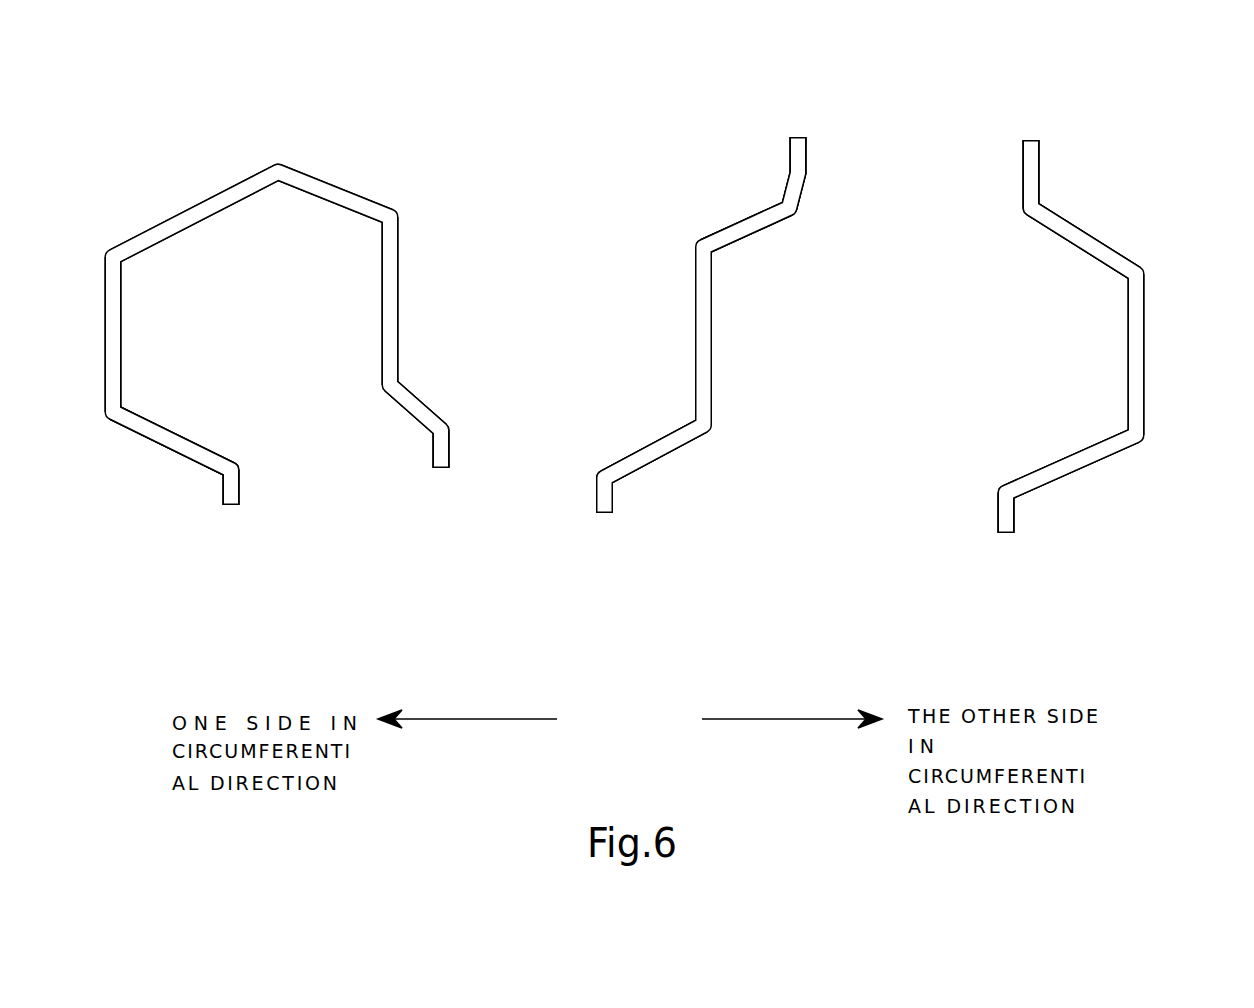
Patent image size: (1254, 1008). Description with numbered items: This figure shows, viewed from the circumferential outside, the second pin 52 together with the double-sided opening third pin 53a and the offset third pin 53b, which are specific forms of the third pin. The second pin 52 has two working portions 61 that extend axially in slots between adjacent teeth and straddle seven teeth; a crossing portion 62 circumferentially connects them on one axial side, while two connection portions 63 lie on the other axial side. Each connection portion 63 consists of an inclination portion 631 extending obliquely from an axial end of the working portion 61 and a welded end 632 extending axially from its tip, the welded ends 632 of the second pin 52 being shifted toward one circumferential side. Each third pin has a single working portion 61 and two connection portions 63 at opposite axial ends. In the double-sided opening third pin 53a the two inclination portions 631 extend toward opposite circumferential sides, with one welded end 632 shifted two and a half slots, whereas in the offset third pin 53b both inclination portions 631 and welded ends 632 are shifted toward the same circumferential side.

The second pin 52 is at (352, 150).
The double-sided opening third pin 53a is at (723, 155).
The offset third pin 53b is at (1112, 150).
The working portion 61 is at (115, 327).
The crossing portion 62 is at (195, 212).
The connection portion 63 is at (122, 580).
The inclination portion 631 is at (182, 447).
The welded end 632 is at (230, 495).